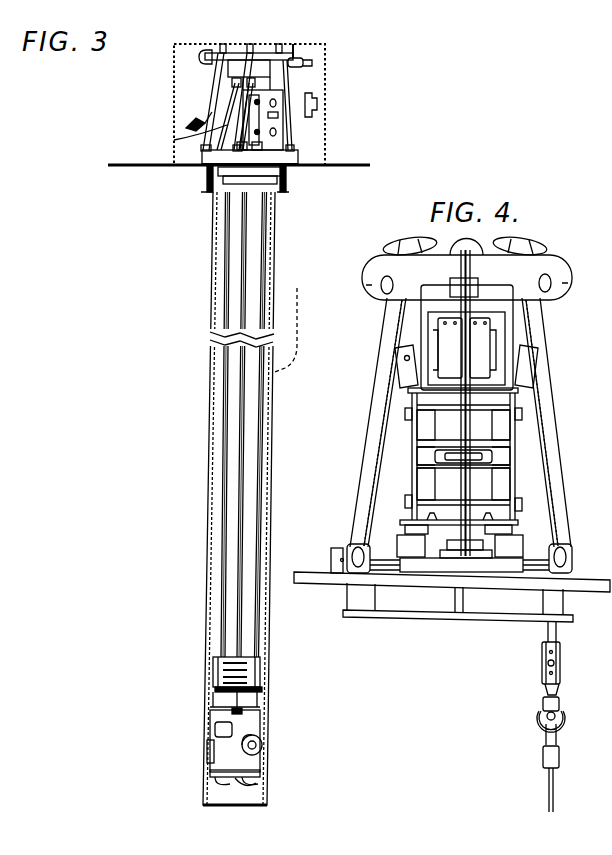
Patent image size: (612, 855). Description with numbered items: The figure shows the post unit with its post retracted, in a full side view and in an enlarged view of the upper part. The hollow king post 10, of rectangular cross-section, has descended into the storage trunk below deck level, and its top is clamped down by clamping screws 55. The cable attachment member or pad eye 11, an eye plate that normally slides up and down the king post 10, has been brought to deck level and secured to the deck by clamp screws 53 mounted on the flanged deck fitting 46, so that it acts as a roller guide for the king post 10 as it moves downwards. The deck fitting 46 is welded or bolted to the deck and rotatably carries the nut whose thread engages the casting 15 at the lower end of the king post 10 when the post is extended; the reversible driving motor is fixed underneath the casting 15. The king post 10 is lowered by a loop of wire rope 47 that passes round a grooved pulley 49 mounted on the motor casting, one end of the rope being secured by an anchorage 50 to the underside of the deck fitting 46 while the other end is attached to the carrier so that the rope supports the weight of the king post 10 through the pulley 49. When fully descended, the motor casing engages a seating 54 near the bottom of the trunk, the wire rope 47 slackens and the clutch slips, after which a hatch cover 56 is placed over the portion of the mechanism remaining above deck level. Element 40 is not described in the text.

In FIG. 3, the king post 10 is at (250, 411).
In FIG. 4, the king post 10 is at (500, 346).
In FIG. 3, the cable attachment member (pad eye) 11 is at (292, 118).
In FIG. 4, the cable attachment member (pad eye) 11 is at (500, 402).
In FIG. 3, the casting 15 is at (250, 672).
In FIG. 3, the cross head 40 is at (204, 57).
In FIG. 4, the cross head 40 is at (525, 268).
In FIG. 3, the deck fitting 46 is at (298, 158).
In FIG. 4, the deck fitting 46 is at (576, 587).
In FIG. 3, the wire rope 47 is at (250, 784).
In FIG. 4, the wire rope 47 is at (553, 800).
In FIG. 3, the grooved pulley 49 is at (259, 756).
In FIG. 4, the grooved pulley 49 is at (551, 721).
In FIG. 4, the anchorage 50 is at (560, 676).
In FIG. 3, the clamp screws 53 is at (245, 137).
In FIG. 3, the seating 54 is at (214, 778).
In FIG. 3, the clamping screws 55 is at (248, 73).
In FIG. 4, the clamping screws 55 is at (396, 322).
In FIG. 3, the hatch cover 56 is at (283, 47).